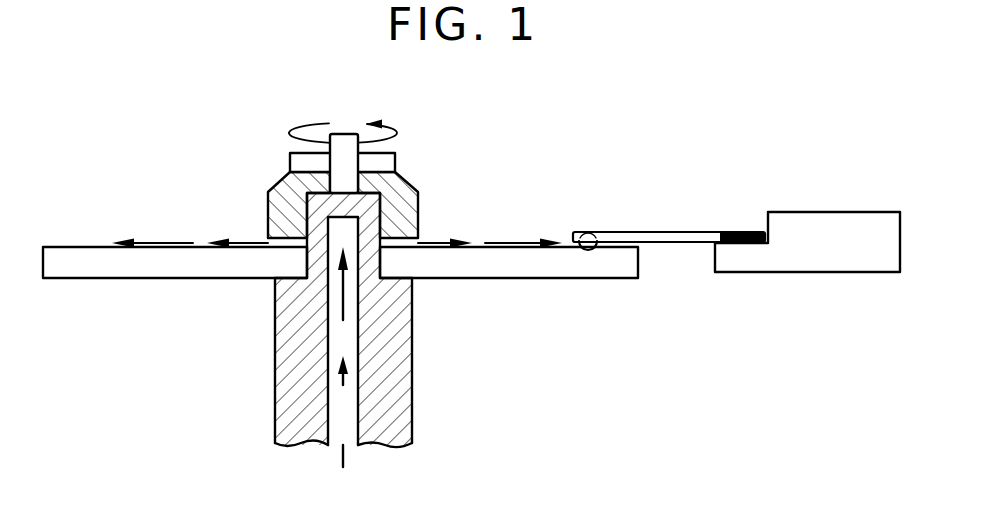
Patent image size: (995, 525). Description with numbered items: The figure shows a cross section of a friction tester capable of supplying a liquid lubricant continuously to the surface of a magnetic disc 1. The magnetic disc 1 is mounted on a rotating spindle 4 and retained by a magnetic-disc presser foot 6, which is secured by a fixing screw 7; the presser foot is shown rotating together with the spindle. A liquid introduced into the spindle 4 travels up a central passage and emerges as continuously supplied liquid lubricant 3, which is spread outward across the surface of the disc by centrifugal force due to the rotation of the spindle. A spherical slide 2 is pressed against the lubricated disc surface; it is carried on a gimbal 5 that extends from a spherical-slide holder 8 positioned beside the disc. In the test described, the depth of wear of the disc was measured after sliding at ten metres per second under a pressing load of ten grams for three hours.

The magnetic disc 1 is at (538, 267).
The spherical slide 2 is at (588, 238).
The continuously supplied liquid lubricant 3 is at (155, 240).
The spindle 4 is at (295, 345).
The gimbal 5 is at (641, 233).
The magnetic-disc presser foot 6 is at (410, 195).
The fixing screw 7 is at (298, 162).
The spherical-slide holder 8 is at (845, 232).